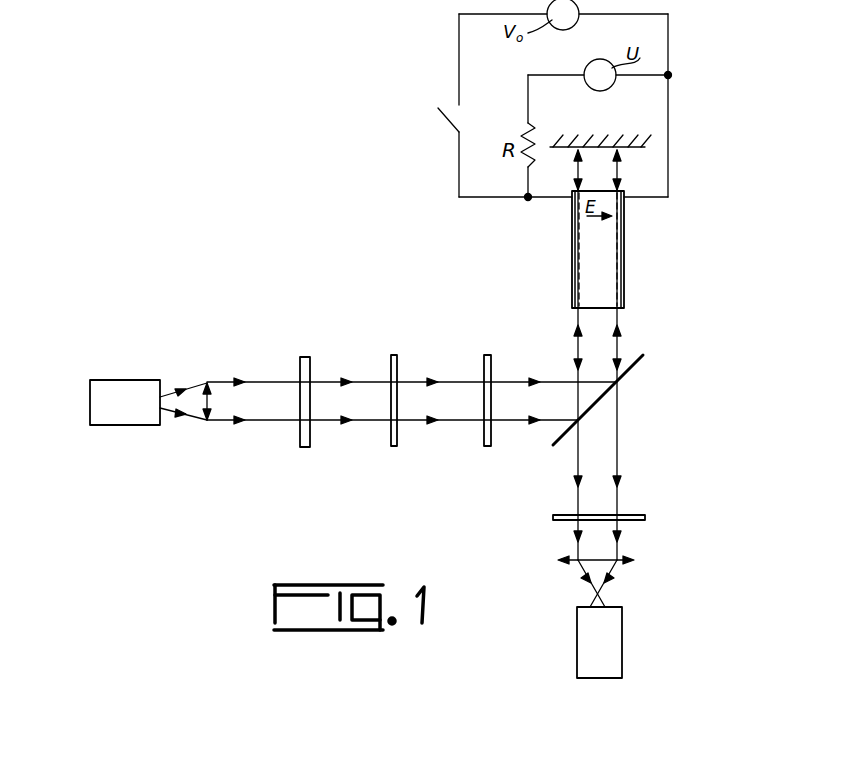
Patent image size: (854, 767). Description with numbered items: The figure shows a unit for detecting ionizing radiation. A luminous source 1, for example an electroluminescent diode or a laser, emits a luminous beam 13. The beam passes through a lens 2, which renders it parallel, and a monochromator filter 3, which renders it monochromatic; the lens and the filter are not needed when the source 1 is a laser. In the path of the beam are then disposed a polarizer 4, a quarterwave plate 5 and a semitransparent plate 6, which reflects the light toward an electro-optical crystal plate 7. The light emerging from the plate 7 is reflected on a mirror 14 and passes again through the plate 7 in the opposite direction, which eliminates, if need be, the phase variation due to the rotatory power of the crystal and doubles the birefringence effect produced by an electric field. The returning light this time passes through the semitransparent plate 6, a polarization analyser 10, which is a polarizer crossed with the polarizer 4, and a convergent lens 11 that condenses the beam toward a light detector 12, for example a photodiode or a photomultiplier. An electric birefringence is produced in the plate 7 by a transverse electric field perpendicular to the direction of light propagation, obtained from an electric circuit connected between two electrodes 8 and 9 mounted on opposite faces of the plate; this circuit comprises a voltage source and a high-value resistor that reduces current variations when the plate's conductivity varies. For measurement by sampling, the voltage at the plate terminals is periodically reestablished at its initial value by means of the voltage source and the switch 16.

The luminous source 1 is at (125, 427).
The lens 2 is at (211, 400).
The luminous beam 13 is at (186, 404).
The monochromator filter 3 is at (299, 431).
The polarizer 4 is at (390, 431).
The quarterwave plate 5 is at (472, 513).
The semitransparent plate 6 is at (635, 364).
The electro-optical crystal plate 7 is at (605, 292).
The electrode 8 is at (477, 258).
The electrode 9 is at (572, 268).
The polarization analyser 10 is at (688, 478).
The convergent lens 11 is at (608, 560).
The light detector 12 is at (674, 662).
The mirror 14 is at (626, 150).
The switch 16 is at (447, 117).